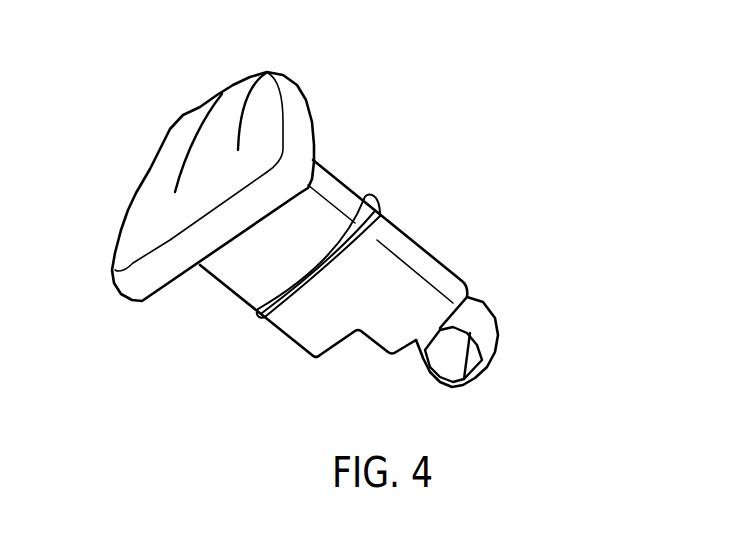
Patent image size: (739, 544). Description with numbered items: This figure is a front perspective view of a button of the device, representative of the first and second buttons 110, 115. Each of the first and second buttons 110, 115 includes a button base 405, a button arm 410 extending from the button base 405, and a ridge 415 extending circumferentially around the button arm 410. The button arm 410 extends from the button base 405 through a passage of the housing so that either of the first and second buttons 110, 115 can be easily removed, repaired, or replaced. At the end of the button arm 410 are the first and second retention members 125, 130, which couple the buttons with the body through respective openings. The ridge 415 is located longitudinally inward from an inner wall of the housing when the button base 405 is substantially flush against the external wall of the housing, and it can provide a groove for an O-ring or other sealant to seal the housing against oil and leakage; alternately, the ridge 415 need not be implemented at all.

The first button 110 is at (309, 231).
The second button 115 is at (309, 231).
The first retention member 125 is at (487, 358).
The second retention member 130 is at (486, 330).
The button base 405 is at (126, 262).
The button arm 410 is at (320, 340).
The ridge 415 is at (338, 256).